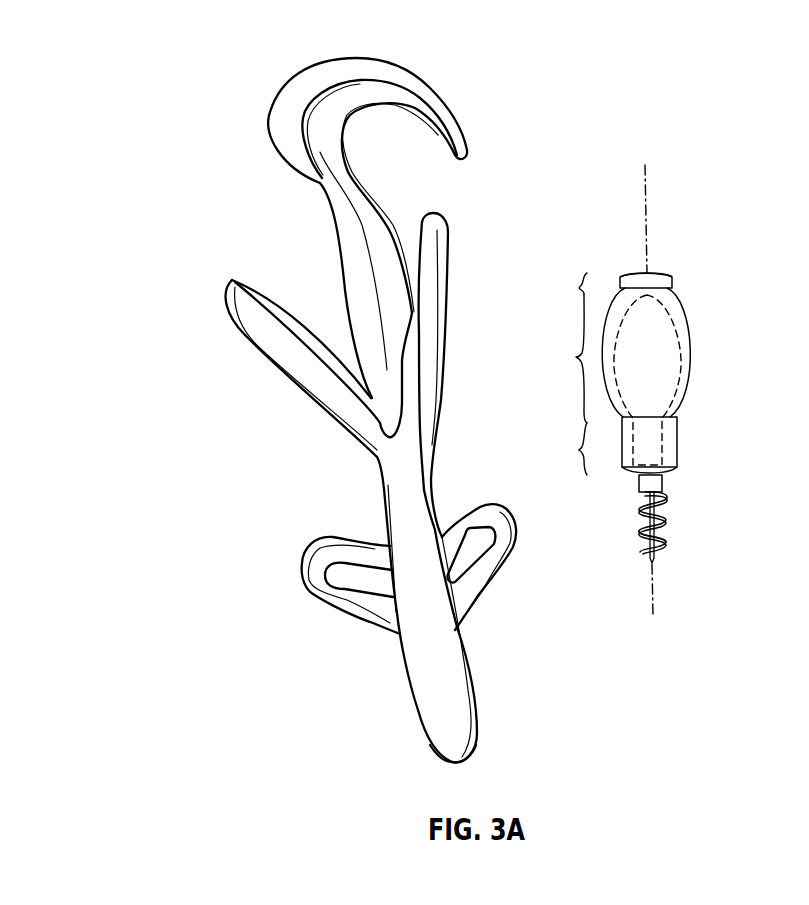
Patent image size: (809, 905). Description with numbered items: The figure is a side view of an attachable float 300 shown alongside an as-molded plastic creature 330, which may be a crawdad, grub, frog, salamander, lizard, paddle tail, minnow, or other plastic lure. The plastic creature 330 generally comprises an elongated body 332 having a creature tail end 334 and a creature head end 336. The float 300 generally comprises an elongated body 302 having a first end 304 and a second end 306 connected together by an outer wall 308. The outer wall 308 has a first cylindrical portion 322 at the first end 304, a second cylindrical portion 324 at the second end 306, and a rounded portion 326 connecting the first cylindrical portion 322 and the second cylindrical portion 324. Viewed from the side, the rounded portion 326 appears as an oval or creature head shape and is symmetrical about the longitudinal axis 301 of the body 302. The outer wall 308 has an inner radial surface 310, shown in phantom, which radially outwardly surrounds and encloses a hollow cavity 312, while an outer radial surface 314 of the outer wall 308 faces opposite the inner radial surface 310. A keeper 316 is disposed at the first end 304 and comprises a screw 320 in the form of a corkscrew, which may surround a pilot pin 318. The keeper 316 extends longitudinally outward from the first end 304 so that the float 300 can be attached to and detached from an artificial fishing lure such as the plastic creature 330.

The attachable float 300 is at (674, 196).
The longitudinal axis 301 is at (643, 188).
The elongated body 302 is at (676, 276).
The first end 304 is at (665, 478).
The second end 306 is at (644, 272).
The outer wall 308 is at (675, 312).
The inner radial surface 310 is at (678, 358).
The hollow cavity 312 is at (665, 435).
The outer radial surface 314 is at (690, 326).
The keeper 316 is at (630, 500).
The pilot pin 318 is at (657, 550).
The screw 320 is at (638, 528).
The first cylindrical portion 322 is at (580, 450).
The second cylindrical portion 324 is at (580, 288).
The rounded portion 326 is at (575, 357).
The as-molded plastic creature 330 is at (205, 137).
The elongated body 332 is at (392, 522).
The creature tail end 334 is at (448, 740).
The creature head end 336 is at (397, 443).